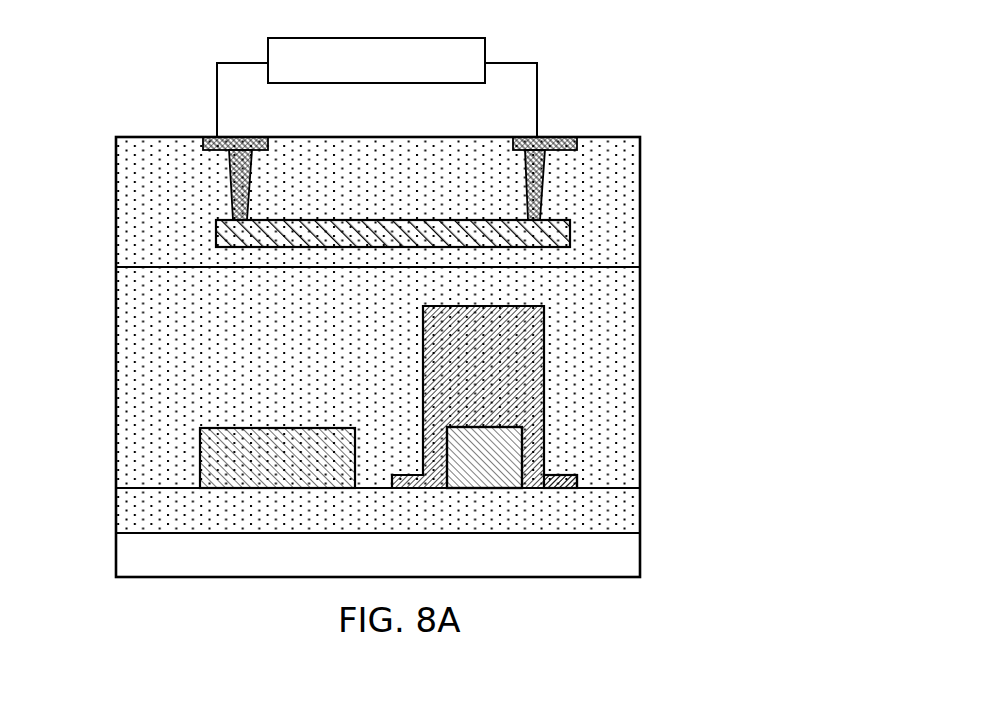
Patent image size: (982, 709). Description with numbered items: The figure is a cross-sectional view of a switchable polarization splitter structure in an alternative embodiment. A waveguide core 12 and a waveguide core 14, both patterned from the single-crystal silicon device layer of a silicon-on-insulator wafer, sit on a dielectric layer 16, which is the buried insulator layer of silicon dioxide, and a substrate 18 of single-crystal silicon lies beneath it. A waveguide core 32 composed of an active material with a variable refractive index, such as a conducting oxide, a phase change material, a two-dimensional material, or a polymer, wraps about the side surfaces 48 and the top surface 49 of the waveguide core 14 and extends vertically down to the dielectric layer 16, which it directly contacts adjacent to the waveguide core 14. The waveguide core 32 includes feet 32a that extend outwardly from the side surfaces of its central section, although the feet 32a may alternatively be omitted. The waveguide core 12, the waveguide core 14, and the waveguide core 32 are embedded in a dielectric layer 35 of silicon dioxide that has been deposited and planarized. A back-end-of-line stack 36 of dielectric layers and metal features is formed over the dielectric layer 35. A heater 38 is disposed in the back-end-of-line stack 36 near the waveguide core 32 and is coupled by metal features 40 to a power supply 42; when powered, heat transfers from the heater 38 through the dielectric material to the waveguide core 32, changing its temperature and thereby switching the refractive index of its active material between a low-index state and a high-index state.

The waveguide core 12 is at (248, 461).
The waveguide core 14 is at (492, 470).
The dielectric layer 16 is at (153, 511).
The substrate 18 is at (157, 562).
The waveguide core 32 is at (522, 340).
The feet 32a is at (562, 483).
The dielectric layer 35 is at (165, 371).
The back-end-of-line stack 36 is at (165, 217).
The heater 38 is at (550, 228).
The metal features 40 is at (230, 145).
The power supply 42 is at (487, 50).
The side surfaces 48 is at (522, 437).
The top surface 49 is at (487, 427).